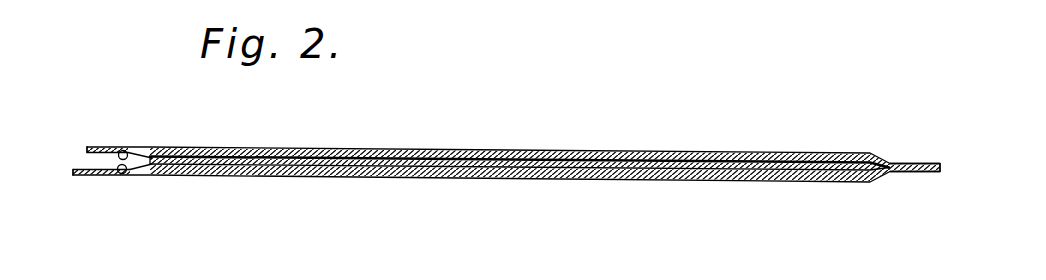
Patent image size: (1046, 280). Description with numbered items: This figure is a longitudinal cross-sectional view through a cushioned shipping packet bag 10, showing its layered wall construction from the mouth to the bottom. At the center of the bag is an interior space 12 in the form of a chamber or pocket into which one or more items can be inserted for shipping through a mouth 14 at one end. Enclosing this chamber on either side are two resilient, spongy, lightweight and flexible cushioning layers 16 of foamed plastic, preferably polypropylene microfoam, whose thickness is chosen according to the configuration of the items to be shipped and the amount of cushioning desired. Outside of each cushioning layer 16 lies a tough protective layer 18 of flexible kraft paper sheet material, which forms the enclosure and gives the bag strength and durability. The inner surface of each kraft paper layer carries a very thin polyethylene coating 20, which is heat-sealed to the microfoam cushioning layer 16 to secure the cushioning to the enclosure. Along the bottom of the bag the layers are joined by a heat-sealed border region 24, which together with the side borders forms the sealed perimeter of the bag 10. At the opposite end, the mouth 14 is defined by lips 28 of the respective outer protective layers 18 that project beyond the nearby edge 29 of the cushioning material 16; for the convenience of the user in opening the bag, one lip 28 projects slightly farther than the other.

The cushioned shipping packet bag 10 is at (663, 124).
The interior space 12 is at (587, 178).
The mouth 14 is at (80, 157).
The cushioning layer 16 is at (477, 149).
The protective layer 18 is at (523, 152).
The polyethylene coating 20 is at (123, 150).
The heat-sealed bottom border region 24 is at (912, 162).
The lip 28 is at (99, 147).
The edge of the cushioning material 29 is at (140, 157).